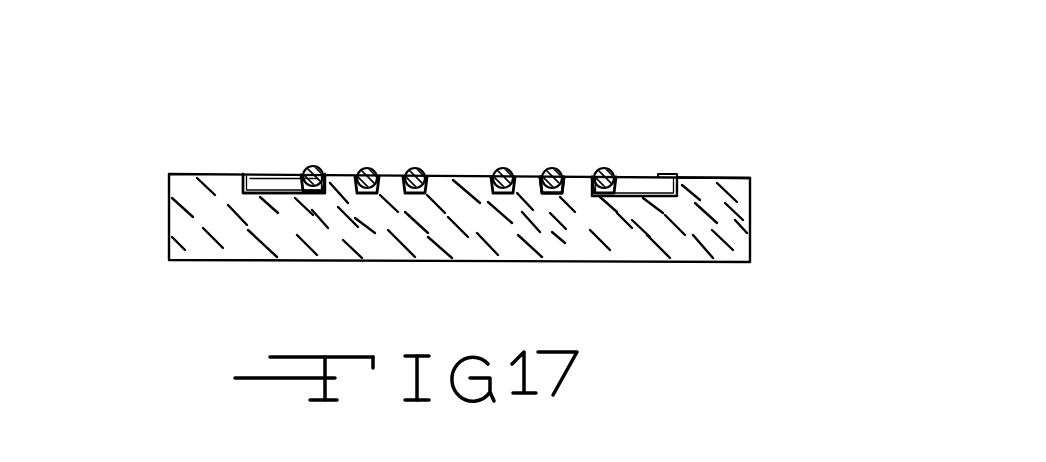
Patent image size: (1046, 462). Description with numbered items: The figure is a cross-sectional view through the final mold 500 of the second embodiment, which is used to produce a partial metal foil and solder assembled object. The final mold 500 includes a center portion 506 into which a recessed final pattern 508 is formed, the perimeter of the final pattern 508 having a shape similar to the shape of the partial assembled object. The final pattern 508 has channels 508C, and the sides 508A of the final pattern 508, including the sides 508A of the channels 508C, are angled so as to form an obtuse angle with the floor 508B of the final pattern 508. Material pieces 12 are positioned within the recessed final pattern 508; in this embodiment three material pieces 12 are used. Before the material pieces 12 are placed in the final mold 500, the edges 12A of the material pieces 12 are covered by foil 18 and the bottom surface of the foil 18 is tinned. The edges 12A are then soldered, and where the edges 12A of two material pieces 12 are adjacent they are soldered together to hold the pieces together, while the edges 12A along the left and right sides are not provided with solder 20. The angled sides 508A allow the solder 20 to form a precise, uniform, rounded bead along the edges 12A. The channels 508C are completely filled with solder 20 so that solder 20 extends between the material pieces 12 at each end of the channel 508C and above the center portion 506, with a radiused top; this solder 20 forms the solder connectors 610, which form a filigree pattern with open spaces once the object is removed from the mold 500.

The final mold 500 is at (750, 219).
The center portion 506 is at (705, 177).
The final pattern 508 is at (325, 176).
The angled sides 508A is at (247, 173).
The floor 508B is at (287, 193).
The channels 508C is at (557, 187).
The material pieces 12 is at (277, 177).
The edges 12A is at (245, 188).
The foil 18 is at (673, 177).
The solder 20 is at (603, 177).
The solder connectors 610 is at (558, 175).